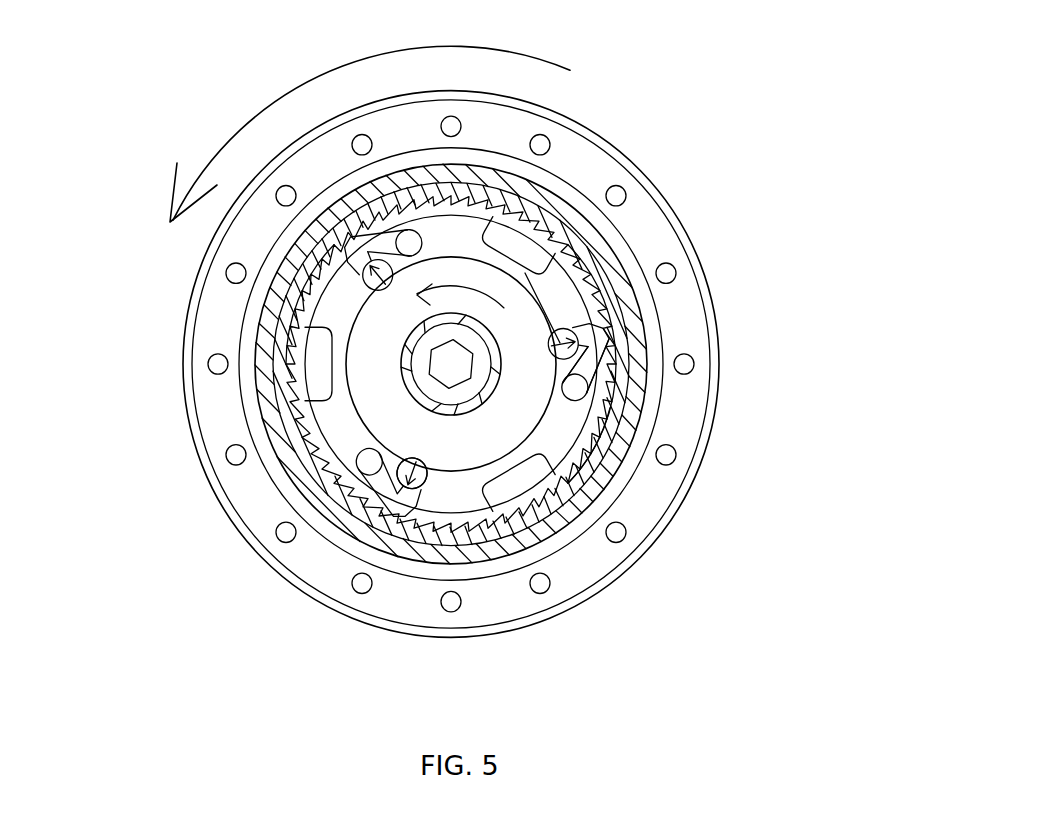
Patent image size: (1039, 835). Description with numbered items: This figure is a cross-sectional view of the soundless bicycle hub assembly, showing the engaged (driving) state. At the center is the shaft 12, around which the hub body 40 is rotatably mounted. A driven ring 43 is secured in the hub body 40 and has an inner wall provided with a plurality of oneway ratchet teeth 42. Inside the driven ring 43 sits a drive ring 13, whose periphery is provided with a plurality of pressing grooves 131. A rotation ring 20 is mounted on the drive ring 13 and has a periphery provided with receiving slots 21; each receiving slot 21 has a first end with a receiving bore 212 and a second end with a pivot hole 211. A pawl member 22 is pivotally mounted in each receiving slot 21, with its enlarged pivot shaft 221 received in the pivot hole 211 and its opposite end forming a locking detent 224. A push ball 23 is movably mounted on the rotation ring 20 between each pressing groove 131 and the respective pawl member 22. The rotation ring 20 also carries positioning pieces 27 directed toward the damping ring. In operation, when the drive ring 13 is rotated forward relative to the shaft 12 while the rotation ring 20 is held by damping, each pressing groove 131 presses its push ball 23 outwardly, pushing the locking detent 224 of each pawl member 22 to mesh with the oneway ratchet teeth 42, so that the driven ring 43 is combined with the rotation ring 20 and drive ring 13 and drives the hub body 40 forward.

The shaft 12 is at (475, 402).
The drive ring 13 is at (352, 416).
The pressing groove 131 is at (590, 294).
The rotation ring 20 is at (287, 410).
The receiving slot 21 is at (622, 355).
The pivot hole 211 is at (618, 448).
The pawl member 22 is at (612, 353).
The enlarged pivot shaft 221 is at (660, 481).
The locking detent 224 is at (626, 345).
The push ball 23 is at (605, 337).
The positioning piece 27 is at (317, 357).
The hub body 40 is at (623, 152).
The oneway ratchet teeth 42 is at (597, 456).
The driven ring 43 is at (587, 268).
The receiving bore 212 is at (418, 480).